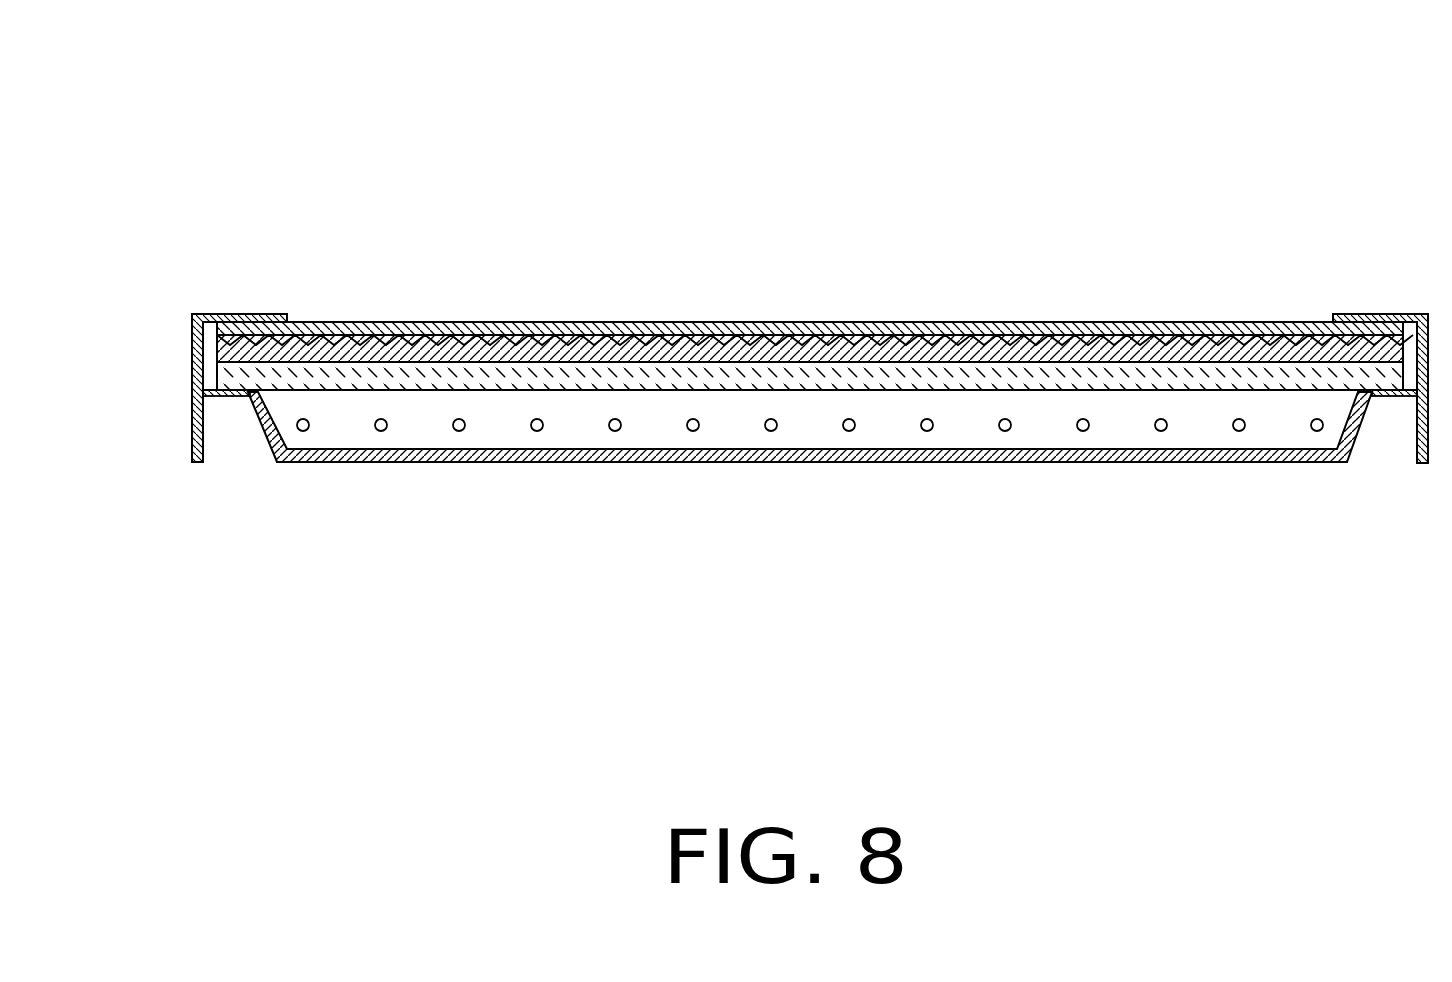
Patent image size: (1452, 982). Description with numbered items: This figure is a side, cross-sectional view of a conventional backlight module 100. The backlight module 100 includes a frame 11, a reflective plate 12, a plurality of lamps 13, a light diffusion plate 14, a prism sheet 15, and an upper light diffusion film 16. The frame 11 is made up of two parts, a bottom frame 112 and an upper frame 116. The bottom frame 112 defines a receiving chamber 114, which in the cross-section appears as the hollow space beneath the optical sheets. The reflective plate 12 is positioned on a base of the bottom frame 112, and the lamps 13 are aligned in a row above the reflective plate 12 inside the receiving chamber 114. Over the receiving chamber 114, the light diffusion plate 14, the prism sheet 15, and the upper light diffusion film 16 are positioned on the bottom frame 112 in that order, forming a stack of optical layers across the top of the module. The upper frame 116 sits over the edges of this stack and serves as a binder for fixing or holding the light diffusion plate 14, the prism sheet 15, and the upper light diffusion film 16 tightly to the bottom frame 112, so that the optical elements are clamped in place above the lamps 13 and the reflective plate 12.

The backlight module 100 is at (743, 117).
The frame 11 is at (402, 582).
The bottom frame 112 is at (367, 462).
The receiving chamber 114 is at (322, 427).
The upper frame 116 is at (192, 433).
The reflective plate 12 is at (675, 453).
The lamps 13 is at (771, 431).
The light diffusion plate 14 is at (1103, 372).
The prism sheet 15 is at (890, 343).
The upper light diffusion film 16 is at (623, 325).